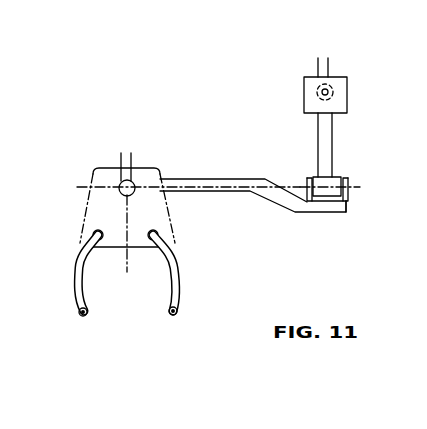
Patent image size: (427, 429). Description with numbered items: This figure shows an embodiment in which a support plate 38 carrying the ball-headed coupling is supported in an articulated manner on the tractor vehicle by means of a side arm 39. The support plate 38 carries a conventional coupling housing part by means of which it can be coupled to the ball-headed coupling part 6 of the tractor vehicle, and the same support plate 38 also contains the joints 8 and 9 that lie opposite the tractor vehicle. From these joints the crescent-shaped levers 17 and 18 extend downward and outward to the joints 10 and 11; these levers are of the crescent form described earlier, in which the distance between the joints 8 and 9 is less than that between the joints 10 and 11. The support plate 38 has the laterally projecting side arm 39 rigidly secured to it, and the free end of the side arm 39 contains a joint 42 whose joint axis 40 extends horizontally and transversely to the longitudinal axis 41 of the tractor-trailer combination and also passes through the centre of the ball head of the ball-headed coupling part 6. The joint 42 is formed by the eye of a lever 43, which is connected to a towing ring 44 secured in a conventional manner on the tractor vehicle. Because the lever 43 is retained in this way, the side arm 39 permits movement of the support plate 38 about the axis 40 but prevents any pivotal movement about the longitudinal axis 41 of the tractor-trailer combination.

The ball-headed coupling part 6 is at (131, 184).
The joint 8 is at (152, 240).
The joint 9 is at (100, 240).
The joint 10 is at (175, 316).
The joint 11 is at (82, 317).
The crescent-shaped lever 17 is at (183, 292).
The crescent-shaped lever 18 is at (73, 293).
The support plate 38 is at (88, 212).
The side arm 39 is at (211, 178).
The joint axis 40 is at (357, 183).
The longitudinal axis 41 is at (122, 150).
The joint 42 is at (352, 203).
The lever 43 is at (327, 139).
The towing ring 44 is at (333, 86).